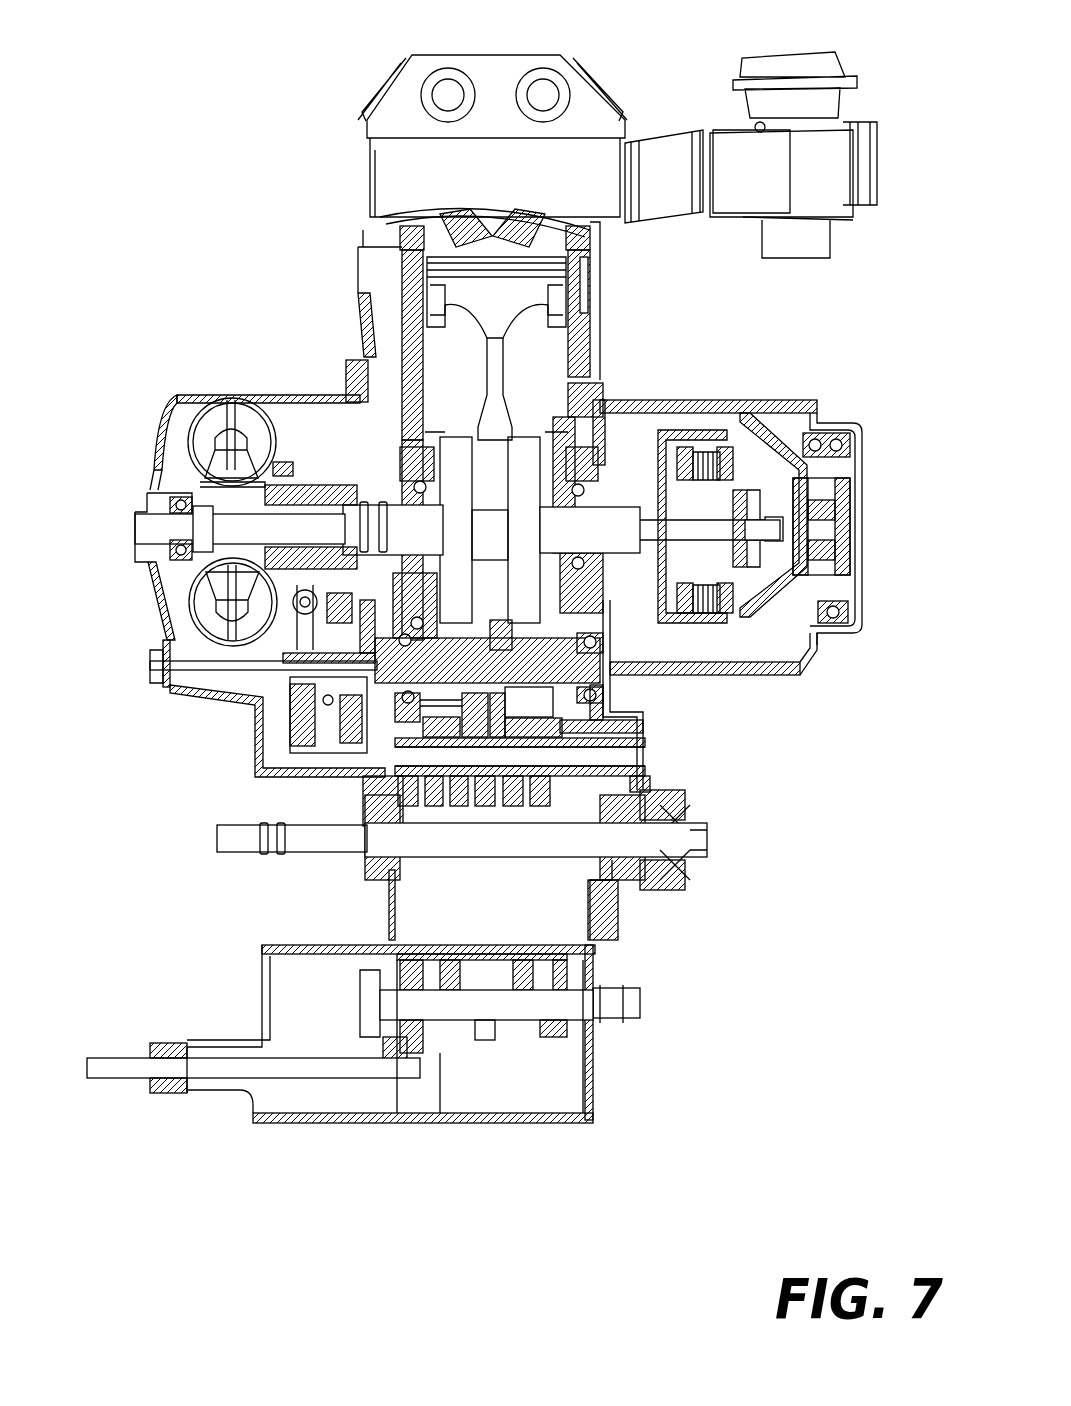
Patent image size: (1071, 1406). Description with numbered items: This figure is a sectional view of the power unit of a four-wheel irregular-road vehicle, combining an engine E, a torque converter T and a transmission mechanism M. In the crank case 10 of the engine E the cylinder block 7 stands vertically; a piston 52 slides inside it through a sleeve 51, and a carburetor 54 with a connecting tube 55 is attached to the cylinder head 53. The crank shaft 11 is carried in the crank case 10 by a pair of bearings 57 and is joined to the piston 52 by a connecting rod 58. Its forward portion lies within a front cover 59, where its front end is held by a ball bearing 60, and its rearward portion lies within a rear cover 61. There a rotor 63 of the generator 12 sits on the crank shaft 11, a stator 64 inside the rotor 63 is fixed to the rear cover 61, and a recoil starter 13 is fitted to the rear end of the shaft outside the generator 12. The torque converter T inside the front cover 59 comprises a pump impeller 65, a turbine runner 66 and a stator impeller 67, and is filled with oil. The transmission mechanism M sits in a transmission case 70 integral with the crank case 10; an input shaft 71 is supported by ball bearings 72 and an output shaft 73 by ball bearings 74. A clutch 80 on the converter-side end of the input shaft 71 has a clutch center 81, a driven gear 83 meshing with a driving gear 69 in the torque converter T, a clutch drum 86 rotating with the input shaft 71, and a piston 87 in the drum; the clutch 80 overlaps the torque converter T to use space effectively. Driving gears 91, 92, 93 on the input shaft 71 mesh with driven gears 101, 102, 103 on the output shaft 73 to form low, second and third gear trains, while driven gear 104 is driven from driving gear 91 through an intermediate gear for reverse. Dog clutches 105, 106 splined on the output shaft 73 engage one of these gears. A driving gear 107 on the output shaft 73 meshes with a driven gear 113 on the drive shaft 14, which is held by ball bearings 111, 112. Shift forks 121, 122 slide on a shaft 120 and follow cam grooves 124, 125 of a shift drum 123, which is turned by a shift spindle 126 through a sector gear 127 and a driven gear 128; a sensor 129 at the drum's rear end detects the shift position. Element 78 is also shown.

The cylinder block 7 is at (598, 335).
The crank case 10 is at (358, 372).
The crank shaft 11 is at (637, 500).
The generator 12 is at (725, 514).
The recoil starter 13 is at (875, 462).
The drive shaft 14 is at (320, 842).
The sleeve 51 is at (592, 288).
The piston 52 is at (530, 295).
The cylinder head 53 is at (505, 78).
The carburetor 54 is at (835, 175).
The connecting tube 55 is at (678, 150).
The bearings 57 is at (395, 482).
The connecting rod 58 is at (512, 392).
The front cover 59 is at (150, 430).
The ball bearing 60 is at (160, 500).
The rear cover 61 is at (805, 670).
The rotor 63 is at (700, 630).
The stator 64 is at (745, 605).
The pump impeller 65 is at (210, 613).
The turbine runner 66 is at (250, 420).
The stator impeller 67 is at (215, 580).
The driving gear 69 is at (305, 470).
The transmission case 70 is at (645, 757).
The input shaft 71 is at (610, 665).
The ball bearings 72 is at (608, 688).
The output shaft 73 is at (640, 778).
The ball bearings 74 is at (658, 795).
The shift shaft 78 is at (160, 700).
The clutch 80 is at (272, 712).
The clutch center 81 is at (295, 702).
The driven gear 83 is at (330, 552).
The clutch drum 86 is at (363, 600).
The piston 87 is at (358, 735).
The driving gear 91 is at (448, 625).
The driving gear 92 is at (492, 620).
The driving gear 93 is at (545, 632).
The driven gear 101 is at (393, 816).
The driven gear 102 is at (475, 780).
The driven gear 103 is at (522, 790).
The driven gear 104 is at (600, 808).
The dog clutch 105 is at (403, 786).
The dog clutch 106 is at (525, 800).
The driving gear 107 is at (648, 730).
The ball bearing 111 is at (385, 810).
The ball bearing 112 is at (610, 895).
The driven gear 113 is at (592, 912).
The shaft 120 is at (480, 942).
The shift fork 121 is at (385, 940).
The shift fork 122 is at (450, 790).
The shift drum 123 is at (540, 1040).
The cam groove 124 is at (458, 982).
The cam groove 125 is at (515, 1022).
The shift spindle 126 is at (310, 1062).
The sector gear 127 is at (428, 1045).
The driven gear 128 is at (370, 978).
The sensor 129 is at (640, 1000).
The engine E is at (345, 245).
The torque converter T is at (195, 393).
The transmission mechanism M is at (652, 725).